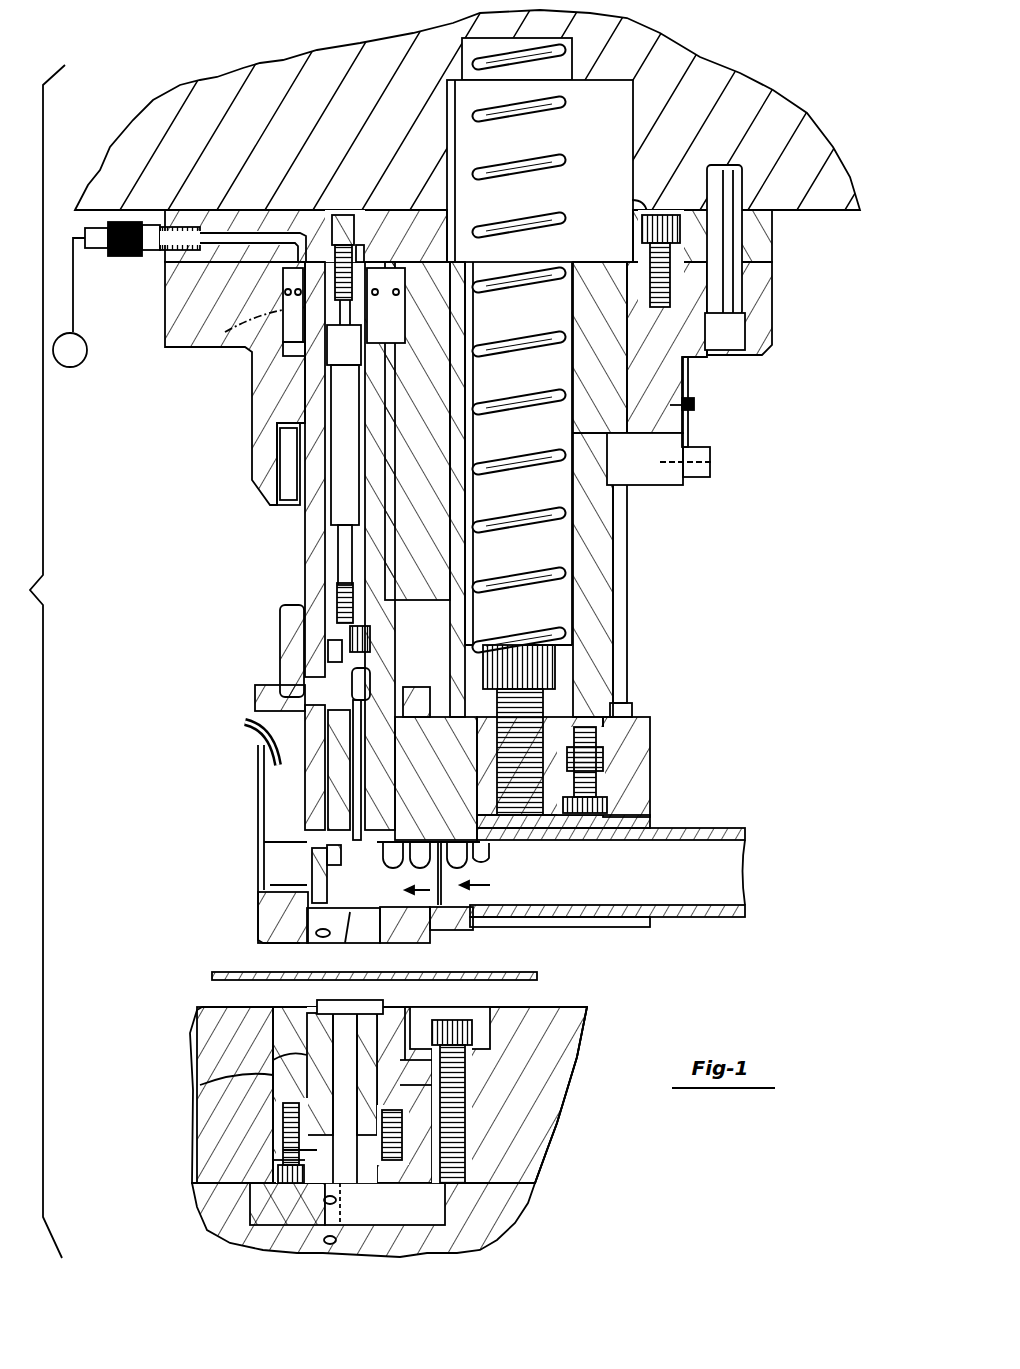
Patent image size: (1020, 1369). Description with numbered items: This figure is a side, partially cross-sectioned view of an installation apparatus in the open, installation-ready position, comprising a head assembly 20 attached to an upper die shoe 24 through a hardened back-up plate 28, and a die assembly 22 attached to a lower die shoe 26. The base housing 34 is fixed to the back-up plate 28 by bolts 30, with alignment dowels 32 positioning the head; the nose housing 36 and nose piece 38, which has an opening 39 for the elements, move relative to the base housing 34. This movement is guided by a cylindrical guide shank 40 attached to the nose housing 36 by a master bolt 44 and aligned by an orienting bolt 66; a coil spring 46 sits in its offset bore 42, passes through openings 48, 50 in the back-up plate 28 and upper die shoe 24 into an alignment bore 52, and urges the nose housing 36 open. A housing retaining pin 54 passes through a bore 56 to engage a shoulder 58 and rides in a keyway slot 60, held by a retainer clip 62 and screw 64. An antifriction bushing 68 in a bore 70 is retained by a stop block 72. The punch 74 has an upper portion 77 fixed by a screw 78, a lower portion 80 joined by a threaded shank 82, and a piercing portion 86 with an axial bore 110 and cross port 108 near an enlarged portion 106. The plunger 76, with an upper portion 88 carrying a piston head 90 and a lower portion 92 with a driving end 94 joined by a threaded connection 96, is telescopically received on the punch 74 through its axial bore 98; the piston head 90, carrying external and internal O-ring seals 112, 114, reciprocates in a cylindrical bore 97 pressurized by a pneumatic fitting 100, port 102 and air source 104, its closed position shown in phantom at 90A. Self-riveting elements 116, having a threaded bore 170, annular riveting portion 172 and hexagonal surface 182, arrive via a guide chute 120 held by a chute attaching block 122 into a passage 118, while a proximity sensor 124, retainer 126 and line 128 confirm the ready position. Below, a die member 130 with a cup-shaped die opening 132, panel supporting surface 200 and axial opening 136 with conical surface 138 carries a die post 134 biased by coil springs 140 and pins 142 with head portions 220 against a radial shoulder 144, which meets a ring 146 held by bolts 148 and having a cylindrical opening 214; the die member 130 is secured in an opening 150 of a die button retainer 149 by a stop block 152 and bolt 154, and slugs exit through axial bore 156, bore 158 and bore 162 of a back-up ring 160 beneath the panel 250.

The head assembly 20 is at (212, 548).
The die assembly 22 is at (266, 1040).
The upper die shoe 24 is at (270, 82).
The lower die shoe 26 is at (505, 1235).
The back-up plate 28 is at (772, 240).
The bolts 30 is at (648, 210).
The alignment dowels 32 is at (733, 168).
The base housing 34 is at (765, 308).
The nose housing 36 is at (640, 730).
The nose piece 38 is at (428, 932).
The opening 39 is at (318, 937).
The guide shank 40 is at (610, 630).
The offset bore 42 is at (480, 510).
The master bolt 44 is at (560, 720).
The coil spring 46 is at (530, 580).
The opening 48 is at (630, 226).
The opening 50 is at (630, 105).
The alignment bore 52 is at (575, 70).
The housing retaining pin 54 is at (632, 471).
The bore 56 is at (688, 480).
The shoulder 58 is at (638, 432).
The keyway slot 60 is at (627, 573).
The retainer clip 62 is at (690, 380).
The screw 64 is at (695, 405).
The orienting bolt 66 is at (600, 790).
The antifriction bushing 68 is at (290, 620).
The bore 70 is at (285, 478).
The stop block 72 is at (275, 690).
The punch 74 is at (332, 545).
The plunger 76 is at (315, 770).
The upper portion 77 is at (362, 252).
The screw 78 is at (340, 235).
The lower portion 80 is at (335, 790).
The threaded shank 82 is at (315, 592).
The piercing portion 86 is at (320, 830).
The upper portion 88 is at (385, 540).
The piston head 90 is at (300, 400).
The piston head closed position 90A is at (285, 312).
The lower portion 92 is at (380, 730).
The free driving end 94 is at (402, 832).
The threaded connection 96 is at (370, 638).
The cylindrical bore 97 is at (305, 340).
The axial bore 98 is at (390, 448).
The pneumatic fitting 100 is at (128, 255).
The port 102 is at (230, 240).
The source of line air pressure 104 is at (60, 361).
The enlarged portion 106 is at (348, 335).
The cross port 108 is at (335, 650).
The axial bore 110 is at (370, 690).
The external O-ring seal 112 is at (300, 378).
The internal O-ring seal 114 is at (370, 380).
The self-riveting element 116 is at (492, 885).
The passage 118 is at (456, 840).
The guide chute 120 is at (718, 840).
The chute attaching block 122 is at (640, 825).
The proximity sensor 124 is at (278, 840).
The retainer 126 is at (262, 920).
The line 128 is at (245, 720).
The die member 130 is at (290, 1022).
The cup-shaped die opening 132 is at (318, 1003).
The die post 134 is at (300, 1060).
The axial opening 136 is at (488, 1060).
The conical surface 138 is at (488, 1085).
The coil springs 140 is at (385, 1204).
The pins 142 is at (466, 1150).
The radial shoulder 144 is at (300, 1115).
The ring 146 is at (295, 1160).
The bolts 148 is at (295, 1150).
The die button retainer 149 is at (560, 1095).
The opening 150 is at (280, 1085).
The stop block 152 is at (518, 1012).
The bolt 154 is at (470, 1190).
The axial bore 156 is at (345, 1012).
The bore 158 is at (324, 1240).
The back-up ring 160 is at (290, 1200).
The bore 162 is at (324, 1200).
The axial bore 170 is at (300, 865).
The annular riveting portion 172 is at (348, 940).
The external surface 182 is at (482, 855).
The panel supporting surface 200 is at (420, 1010).
The cylindrical opening 214 is at (366, 1204).
The head portion 220 is at (495, 1118).
The panel 250 is at (240, 970).